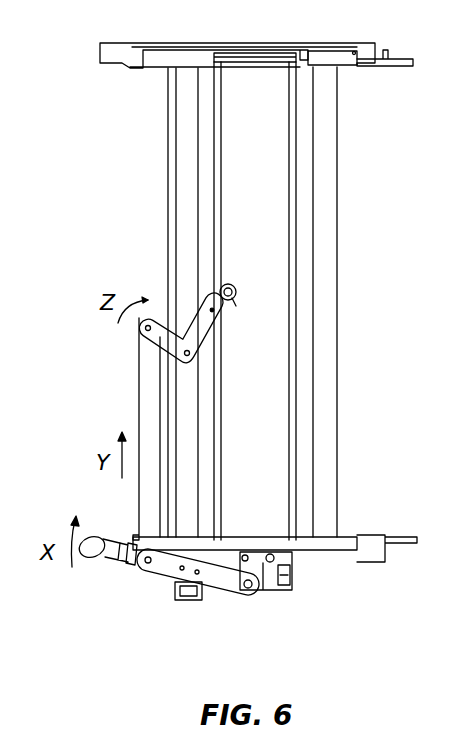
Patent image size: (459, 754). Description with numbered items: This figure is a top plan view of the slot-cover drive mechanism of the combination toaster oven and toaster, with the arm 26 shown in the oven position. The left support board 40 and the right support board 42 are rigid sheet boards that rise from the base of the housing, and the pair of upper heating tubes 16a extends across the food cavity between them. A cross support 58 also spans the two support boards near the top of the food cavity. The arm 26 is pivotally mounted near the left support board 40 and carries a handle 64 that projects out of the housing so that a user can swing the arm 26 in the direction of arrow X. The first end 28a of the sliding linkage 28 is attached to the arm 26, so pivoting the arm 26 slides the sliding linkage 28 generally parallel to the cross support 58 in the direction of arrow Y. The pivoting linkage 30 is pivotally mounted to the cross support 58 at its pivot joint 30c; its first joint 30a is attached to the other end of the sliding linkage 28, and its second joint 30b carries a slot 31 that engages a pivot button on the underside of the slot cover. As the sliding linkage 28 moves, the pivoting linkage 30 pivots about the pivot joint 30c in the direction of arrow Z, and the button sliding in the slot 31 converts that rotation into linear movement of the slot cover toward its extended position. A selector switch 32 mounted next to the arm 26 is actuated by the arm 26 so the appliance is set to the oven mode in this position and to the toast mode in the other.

The right support board 42 is at (320, 56).
The upper heating tubes 16a is at (164, 134).
The cross support 58 is at (183, 168).
The second joint 30b is at (232, 287).
The slot 31 is at (228, 301).
The pivoting linkage 30 is at (163, 338).
The first joint 30a is at (145, 324).
The pivot joint 30c is at (185, 363).
The sliding linkage 28 is at (142, 508).
The left support board 40 is at (367, 555).
The arm 26 is at (220, 582).
The first end 28a is at (148, 565).
The selector switch 32 is at (182, 591).
The handle 64 is at (83, 552).